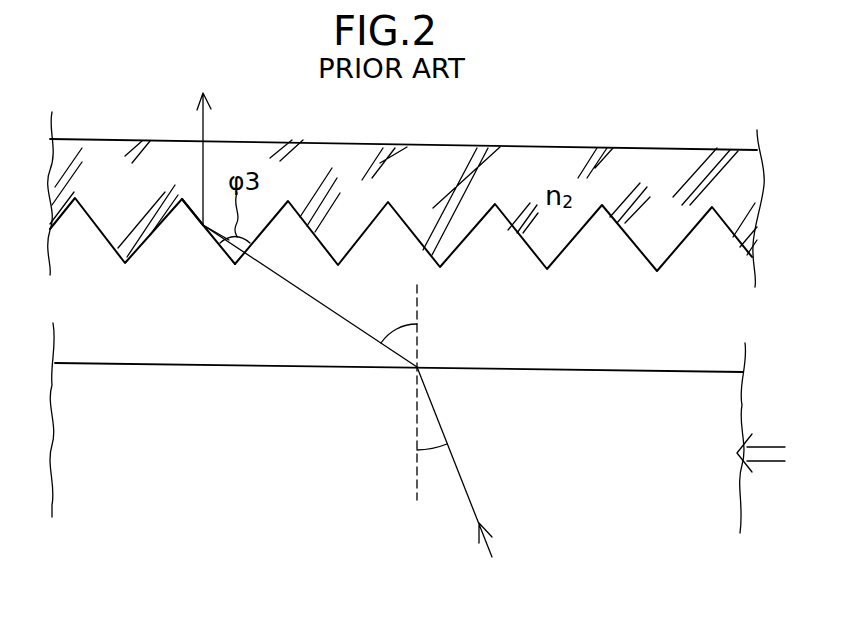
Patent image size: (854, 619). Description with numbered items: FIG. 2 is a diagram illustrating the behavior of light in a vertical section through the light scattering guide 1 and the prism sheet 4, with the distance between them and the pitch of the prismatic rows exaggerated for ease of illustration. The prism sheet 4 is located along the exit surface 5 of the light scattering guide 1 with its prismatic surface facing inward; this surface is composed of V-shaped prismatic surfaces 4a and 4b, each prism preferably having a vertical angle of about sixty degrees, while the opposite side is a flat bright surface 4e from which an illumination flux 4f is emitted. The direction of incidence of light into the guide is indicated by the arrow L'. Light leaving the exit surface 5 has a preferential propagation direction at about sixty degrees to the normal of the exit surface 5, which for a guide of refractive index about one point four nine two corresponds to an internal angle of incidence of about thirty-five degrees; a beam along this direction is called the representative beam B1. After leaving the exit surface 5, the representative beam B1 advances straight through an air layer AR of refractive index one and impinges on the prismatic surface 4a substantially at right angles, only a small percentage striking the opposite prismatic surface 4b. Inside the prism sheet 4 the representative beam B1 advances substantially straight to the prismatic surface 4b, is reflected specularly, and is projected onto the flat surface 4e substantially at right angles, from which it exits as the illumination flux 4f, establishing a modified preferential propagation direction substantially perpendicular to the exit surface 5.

The light scattering guide 1 is at (125, 448).
The prism sheet 4 is at (123, 183).
The prismatic surface 4a is at (268, 225).
The prismatic surface 4b is at (197, 218).
The flat surface 4e is at (593, 150).
The illumination flux 4f is at (200, 144).
The exit surface 5 is at (198, 363).
The air layer AR is at (120, 310).
The representative beam B1 is at (361, 408).
The direction of incidence L' is at (777, 454).